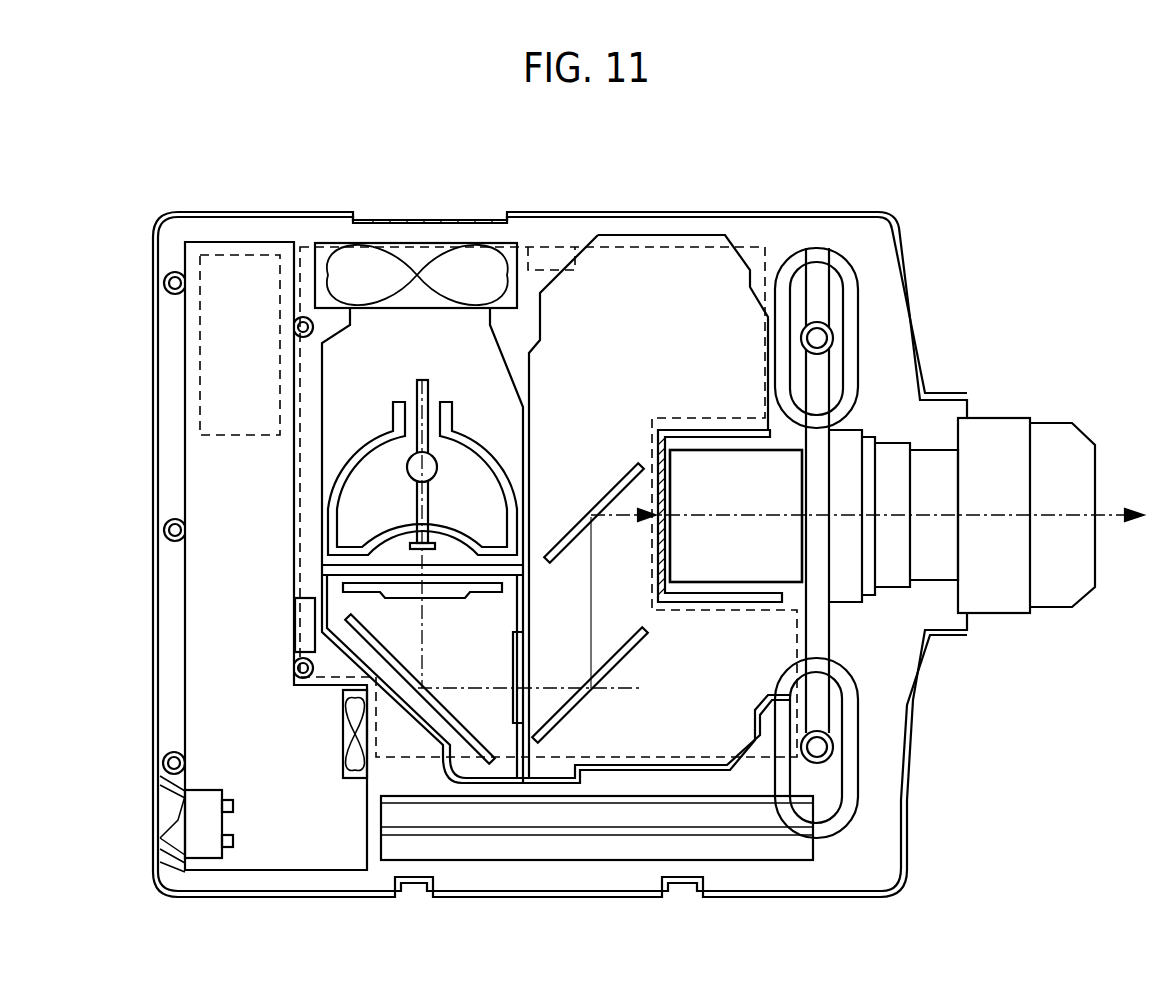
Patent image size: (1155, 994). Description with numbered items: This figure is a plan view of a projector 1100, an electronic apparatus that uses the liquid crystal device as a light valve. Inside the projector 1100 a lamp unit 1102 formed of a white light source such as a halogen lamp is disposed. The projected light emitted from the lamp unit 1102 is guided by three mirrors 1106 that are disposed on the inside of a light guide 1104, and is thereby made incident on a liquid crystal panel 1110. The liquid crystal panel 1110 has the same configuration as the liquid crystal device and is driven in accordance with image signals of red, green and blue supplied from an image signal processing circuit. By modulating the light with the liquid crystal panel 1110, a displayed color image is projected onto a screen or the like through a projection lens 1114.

The projector 1100 is at (915, 220).
The lamp unit 1102 is at (473, 362).
The light guide 1104 is at (595, 262).
The mirrors 1106 is at (370, 643).
The liquid crystal panel 1110 is at (660, 483).
The projection lens 1114 is at (1062, 432).